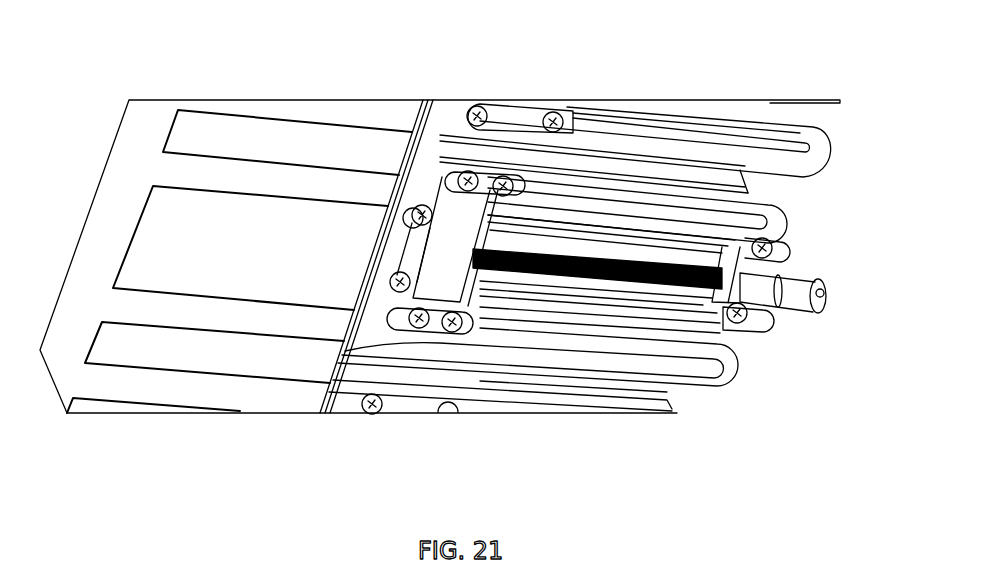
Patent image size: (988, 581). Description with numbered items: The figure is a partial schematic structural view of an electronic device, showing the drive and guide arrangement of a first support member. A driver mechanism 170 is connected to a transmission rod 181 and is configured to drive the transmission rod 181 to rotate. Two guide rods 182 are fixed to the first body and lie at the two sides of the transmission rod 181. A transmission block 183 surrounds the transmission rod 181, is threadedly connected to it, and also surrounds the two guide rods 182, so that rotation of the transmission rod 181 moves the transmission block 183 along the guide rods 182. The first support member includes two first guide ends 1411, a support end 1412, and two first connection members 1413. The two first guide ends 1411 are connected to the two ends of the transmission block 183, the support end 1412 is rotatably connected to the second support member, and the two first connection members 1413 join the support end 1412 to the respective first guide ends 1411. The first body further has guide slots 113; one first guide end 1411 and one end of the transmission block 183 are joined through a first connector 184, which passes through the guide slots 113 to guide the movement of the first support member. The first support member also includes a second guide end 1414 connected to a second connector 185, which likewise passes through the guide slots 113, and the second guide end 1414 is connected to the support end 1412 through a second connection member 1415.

The support end 1412 is at (155, 112).
The second connection member 1415 is at (337, 113).
The first connection member 1413 is at (245, 320).
The second guide end 1414 is at (513, 115).
The first guide end 1411 is at (477, 332).
The transmission block 183 is at (460, 217).
The second connector 185 is at (482, 110).
The guide rod 182 is at (530, 282).
The transmission rod 181 is at (587, 265).
The guide slot 113 is at (822, 152).
The driver mechanism 170 is at (777, 280).
The first connector 184 is at (445, 332).